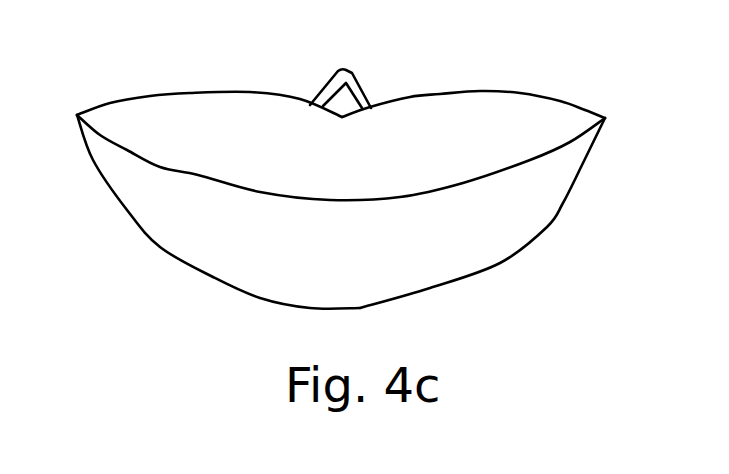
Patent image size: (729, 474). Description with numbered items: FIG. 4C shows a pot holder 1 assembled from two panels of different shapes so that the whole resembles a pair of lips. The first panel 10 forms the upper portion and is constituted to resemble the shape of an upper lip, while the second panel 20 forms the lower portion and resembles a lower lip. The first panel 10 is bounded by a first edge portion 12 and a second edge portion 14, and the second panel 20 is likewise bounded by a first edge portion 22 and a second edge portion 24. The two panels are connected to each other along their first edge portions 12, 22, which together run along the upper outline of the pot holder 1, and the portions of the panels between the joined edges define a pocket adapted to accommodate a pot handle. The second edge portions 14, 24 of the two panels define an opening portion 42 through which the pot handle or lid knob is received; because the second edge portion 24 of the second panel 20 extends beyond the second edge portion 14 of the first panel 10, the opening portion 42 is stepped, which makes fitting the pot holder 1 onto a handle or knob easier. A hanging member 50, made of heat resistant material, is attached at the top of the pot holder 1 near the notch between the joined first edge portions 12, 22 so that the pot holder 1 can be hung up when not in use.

The pot holder 1 is at (395, 168).
The first panel 10 is at (341, 149).
The first edge portion 12 is at (357, 62).
The second edge portion 14 is at (198, 176).
The second panel 20 is at (368, 223).
The first edge portion 22 is at (473, 92).
The second edge portion 24 is at (500, 263).
The opening portion 42 is at (234, 248).
The hanging member 50 is at (355, 85).